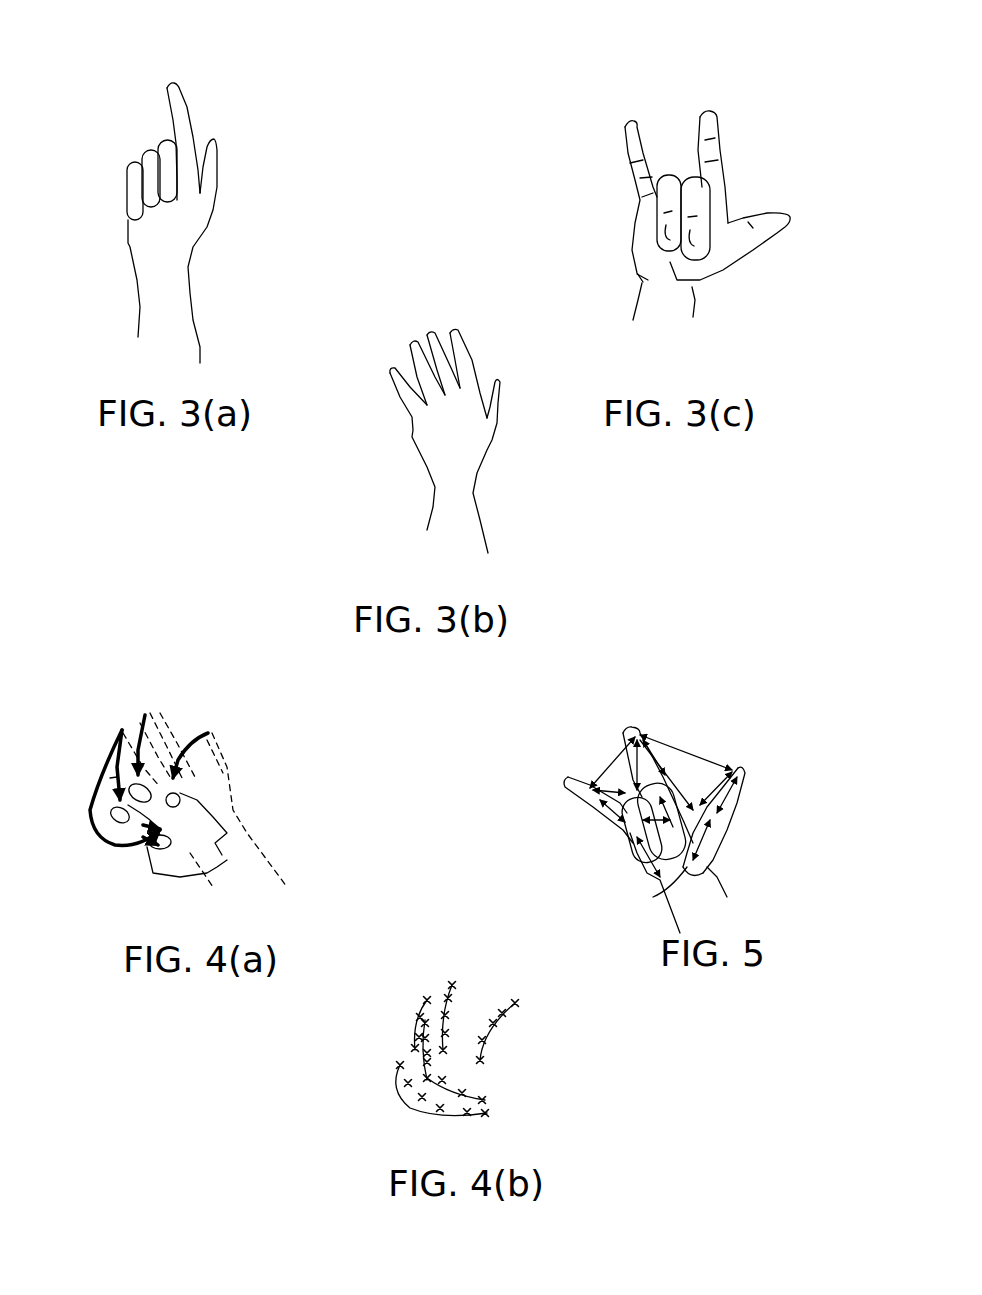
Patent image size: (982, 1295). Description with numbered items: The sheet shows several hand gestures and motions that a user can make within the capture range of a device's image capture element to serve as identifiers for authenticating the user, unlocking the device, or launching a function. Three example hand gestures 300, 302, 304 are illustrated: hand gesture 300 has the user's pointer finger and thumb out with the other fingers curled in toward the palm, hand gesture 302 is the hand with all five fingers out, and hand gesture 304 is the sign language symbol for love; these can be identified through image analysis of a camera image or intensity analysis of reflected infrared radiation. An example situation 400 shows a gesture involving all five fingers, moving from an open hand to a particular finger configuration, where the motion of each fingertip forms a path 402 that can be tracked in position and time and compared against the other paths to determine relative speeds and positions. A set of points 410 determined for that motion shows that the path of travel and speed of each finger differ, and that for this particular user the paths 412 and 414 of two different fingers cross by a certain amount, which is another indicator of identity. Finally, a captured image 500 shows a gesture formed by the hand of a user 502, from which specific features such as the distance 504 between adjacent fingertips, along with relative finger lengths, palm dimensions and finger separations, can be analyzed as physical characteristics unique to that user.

In FIG. 3A, the hand gesture 300 is at (105, 150).
In FIG. 3B, the hand gesture 302 is at (378, 310).
In FIG. 3C, the hand gesture 304 is at (528, 170).
In FIG. 4A, the example situation 400 is at (209, 787).
In FIG. 4A, the path 402 is at (103, 760).
In FIG. 4B, the set of points 410 is at (447, 1017).
In FIG. 4B, the path 412 is at (417, 1033).
In FIG. 4B, the path 414 is at (423, 1007).
In FIG. 5, the image 500 is at (677, 767).
In FIG. 5, the hand of a user 502 is at (723, 897).
In FIG. 5, the distance 504 is at (697, 757).